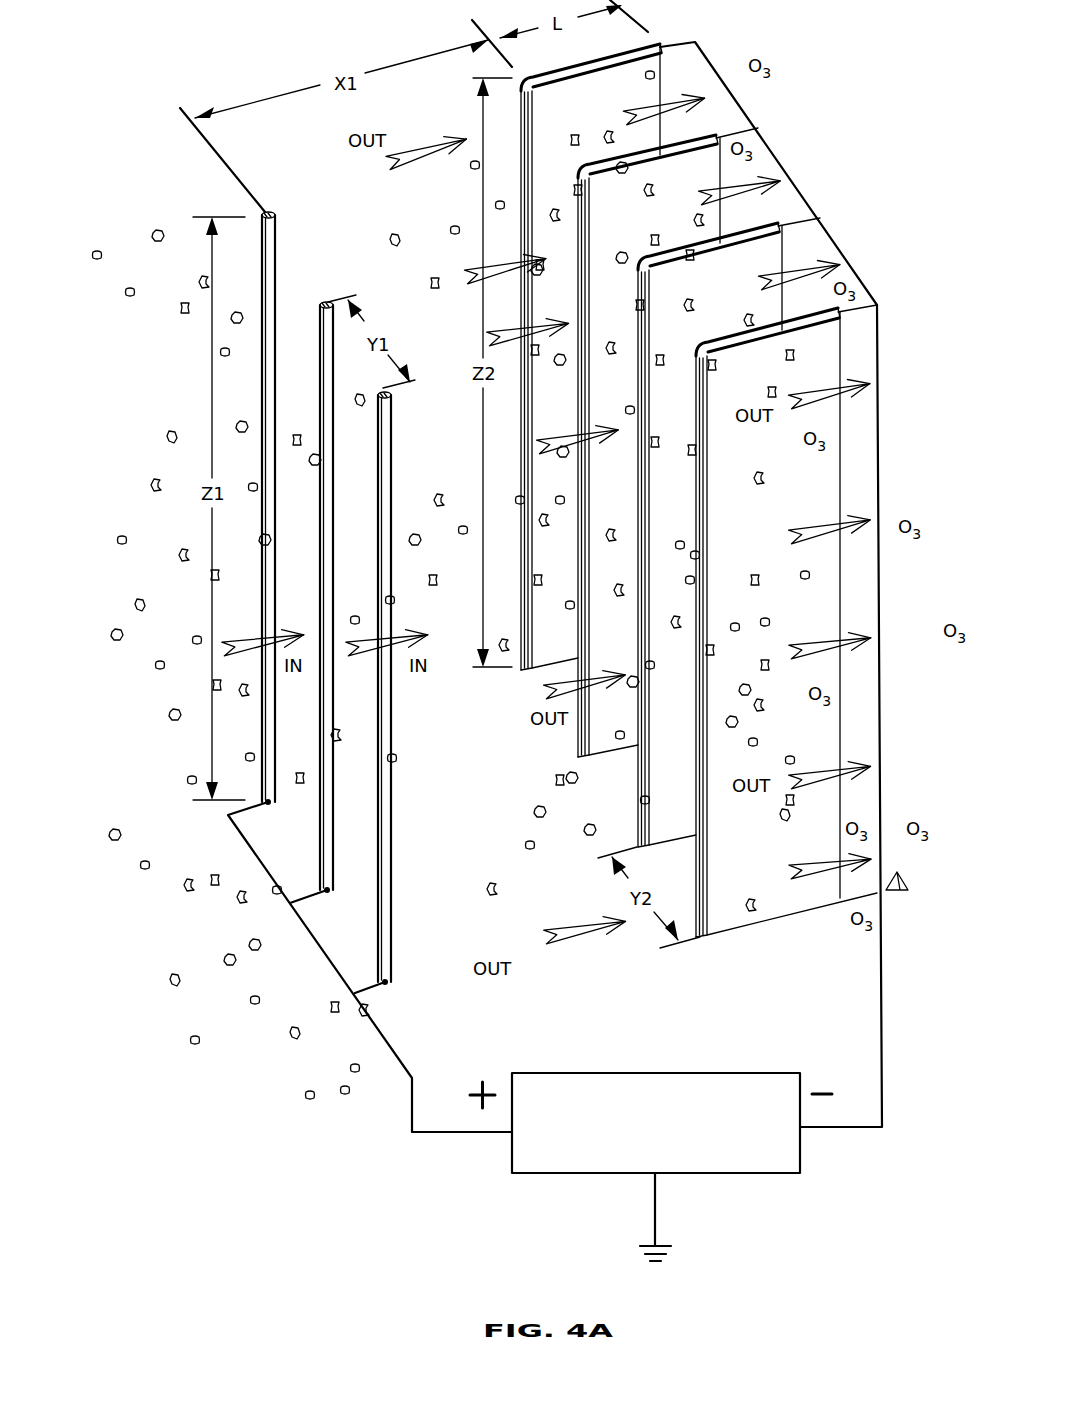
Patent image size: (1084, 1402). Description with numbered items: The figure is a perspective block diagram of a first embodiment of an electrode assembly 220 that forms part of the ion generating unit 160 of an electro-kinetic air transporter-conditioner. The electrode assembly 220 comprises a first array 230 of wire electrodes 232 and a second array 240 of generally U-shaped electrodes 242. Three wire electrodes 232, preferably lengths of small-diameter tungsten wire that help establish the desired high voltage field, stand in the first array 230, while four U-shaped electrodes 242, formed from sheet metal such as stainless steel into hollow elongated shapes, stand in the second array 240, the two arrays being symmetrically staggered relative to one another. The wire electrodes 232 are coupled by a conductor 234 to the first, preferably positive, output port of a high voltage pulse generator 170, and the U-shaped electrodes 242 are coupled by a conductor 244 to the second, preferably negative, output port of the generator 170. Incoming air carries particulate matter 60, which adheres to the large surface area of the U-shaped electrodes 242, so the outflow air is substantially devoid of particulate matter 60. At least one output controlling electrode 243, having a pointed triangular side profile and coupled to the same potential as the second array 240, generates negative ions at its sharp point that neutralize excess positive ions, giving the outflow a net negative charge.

The particulate matter 60 is at (153, 233).
The ion generating unit 160 is at (244, 1053).
The high voltage pulse generator 170 is at (676, 1070).
The electrode assembly 220 is at (236, 66).
The first array 230 is at (296, 598).
The wire electrodes 232 is at (277, 283).
The conductor 234 is at (322, 965).
The second array 240 is at (636, 490).
The U-shaped electrodes 242 is at (613, 114).
The output controlling electrode 243 is at (908, 890).
The conductor 244 is at (883, 990).